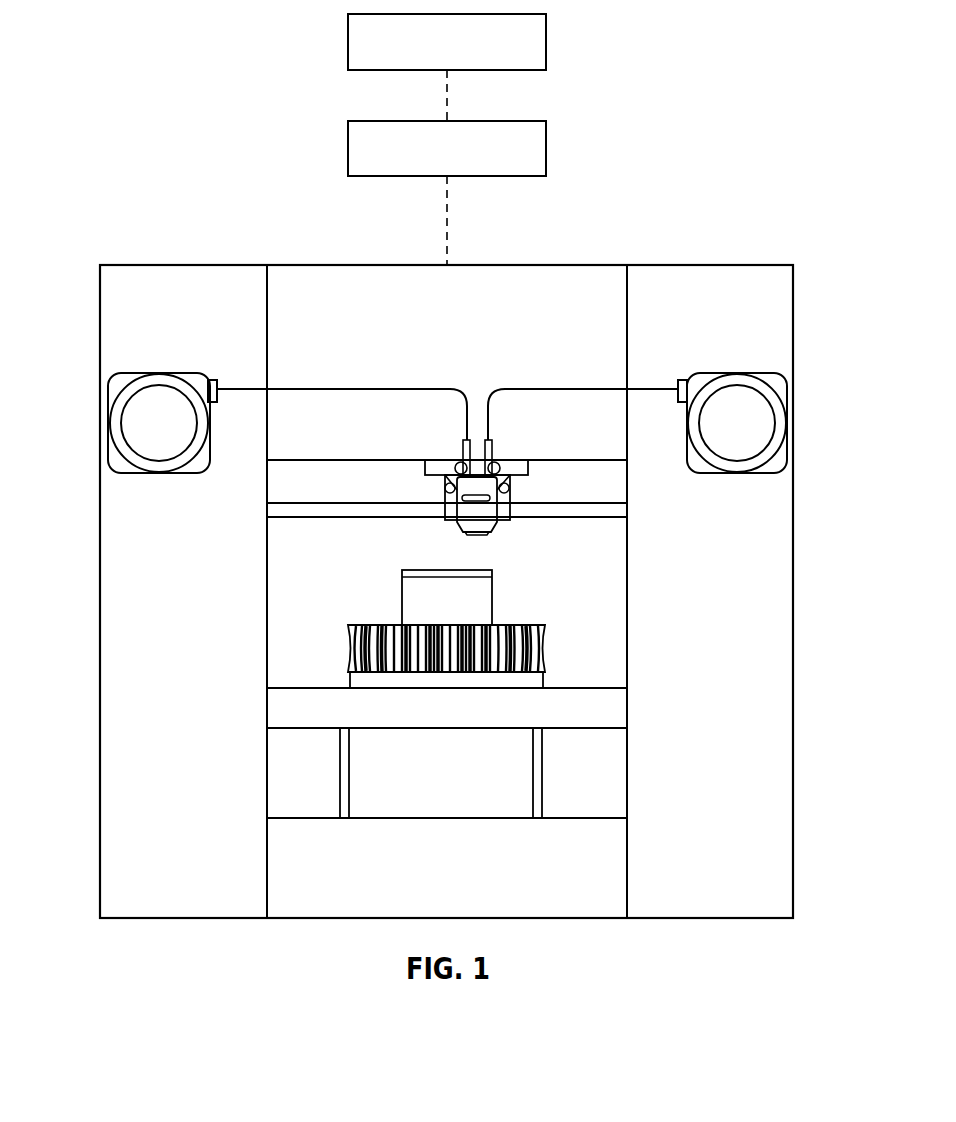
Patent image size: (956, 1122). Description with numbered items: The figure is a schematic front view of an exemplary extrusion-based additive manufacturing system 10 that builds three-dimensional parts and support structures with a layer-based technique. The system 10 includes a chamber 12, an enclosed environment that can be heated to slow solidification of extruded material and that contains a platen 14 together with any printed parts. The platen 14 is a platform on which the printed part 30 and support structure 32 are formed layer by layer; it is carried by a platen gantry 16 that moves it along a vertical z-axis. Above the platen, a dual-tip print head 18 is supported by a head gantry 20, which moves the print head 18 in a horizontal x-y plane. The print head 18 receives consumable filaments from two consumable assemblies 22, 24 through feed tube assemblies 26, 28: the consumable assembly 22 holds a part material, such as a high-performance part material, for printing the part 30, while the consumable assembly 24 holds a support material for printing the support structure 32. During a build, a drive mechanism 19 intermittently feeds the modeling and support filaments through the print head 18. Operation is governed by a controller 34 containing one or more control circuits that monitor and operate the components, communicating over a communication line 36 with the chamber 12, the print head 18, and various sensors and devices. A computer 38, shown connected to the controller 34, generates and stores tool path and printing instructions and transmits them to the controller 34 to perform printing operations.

The additive manufacturing system 10 is at (150, 50).
The chamber 12 is at (278, 657).
The platen 14 is at (614, 708).
The platen gantry 16 is at (552, 772).
The print head 18 is at (520, 490).
The drive mechanism 19 is at (500, 438).
The head gantry 20 is at (336, 503).
The consumable assembly 22 is at (158, 373).
The consumable assembly 24 is at (705, 373).
The feed tube assembly 26 is at (331, 389).
The feed tube assembly 28 is at (597, 389).
The 3D part 30 is at (402, 598).
The support structure 32 is at (544, 682).
The controller 34 is at (547, 149).
The communication line 36 is at (449, 244).
The computer 38 is at (547, 42).